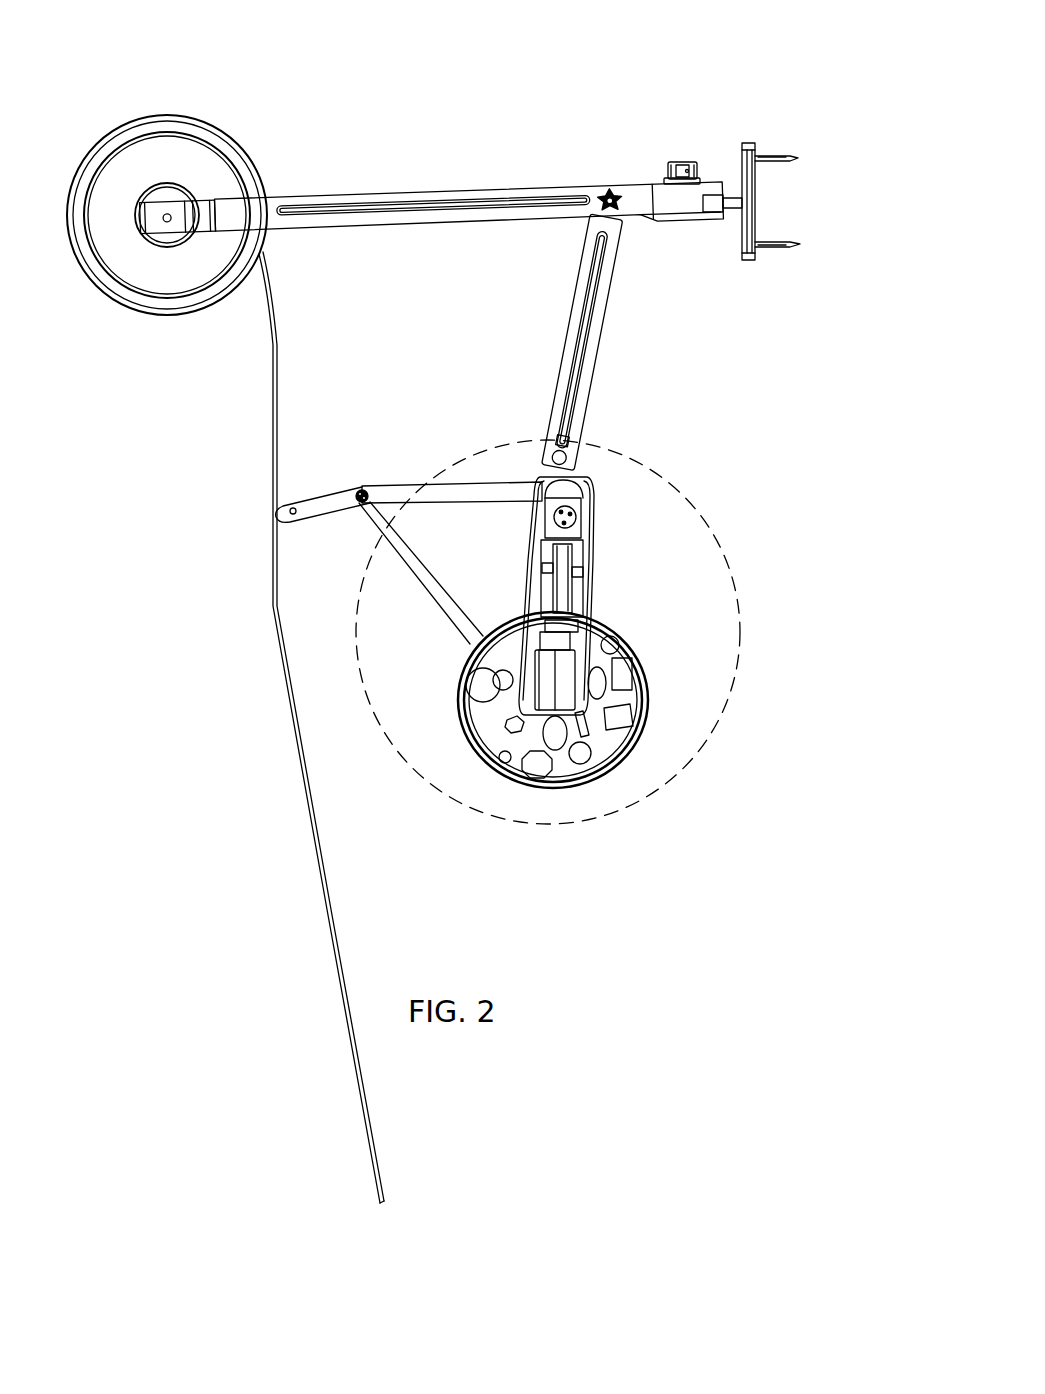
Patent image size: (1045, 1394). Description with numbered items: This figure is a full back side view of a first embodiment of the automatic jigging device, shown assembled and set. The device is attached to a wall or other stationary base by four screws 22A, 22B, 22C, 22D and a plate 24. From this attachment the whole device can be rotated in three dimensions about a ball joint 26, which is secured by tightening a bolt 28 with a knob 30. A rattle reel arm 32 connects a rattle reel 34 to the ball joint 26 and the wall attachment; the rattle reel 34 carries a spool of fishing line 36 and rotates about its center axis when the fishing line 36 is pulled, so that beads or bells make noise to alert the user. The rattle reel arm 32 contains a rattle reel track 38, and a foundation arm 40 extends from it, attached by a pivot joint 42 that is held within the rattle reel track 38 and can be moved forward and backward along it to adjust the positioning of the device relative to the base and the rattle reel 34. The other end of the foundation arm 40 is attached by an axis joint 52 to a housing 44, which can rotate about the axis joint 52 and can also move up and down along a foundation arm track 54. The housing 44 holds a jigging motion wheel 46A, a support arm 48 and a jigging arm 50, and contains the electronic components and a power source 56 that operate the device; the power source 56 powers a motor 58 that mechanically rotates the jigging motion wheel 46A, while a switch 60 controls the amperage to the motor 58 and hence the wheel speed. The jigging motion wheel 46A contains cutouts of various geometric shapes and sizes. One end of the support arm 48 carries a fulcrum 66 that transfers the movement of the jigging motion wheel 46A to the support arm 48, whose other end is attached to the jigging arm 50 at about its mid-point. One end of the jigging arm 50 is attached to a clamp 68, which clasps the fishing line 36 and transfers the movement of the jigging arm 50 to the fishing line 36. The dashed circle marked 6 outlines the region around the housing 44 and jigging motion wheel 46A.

The cutting head assembly 6 is at (625, 810).
The screw 22A is at (785, 157).
The screw 22B is at (795, 163).
The screw 22C is at (777, 247).
The screw 22D is at (795, 247).
The plate 24 is at (757, 200).
The ball joint 26 is at (712, 207).
The bolt 28 is at (652, 106).
The knob 30 is at (682, 162).
The rattle reel arm 32 is at (428, 128).
The rattle reel 34 is at (185, 108).
The fishing line 36 is at (278, 340).
The rattle reel track 38 is at (363, 200).
The foundation arm 40 is at (661, 357).
The pivot joint 42 is at (603, 190).
The housing 44 is at (592, 521).
The jigging motion wheel 46A is at (540, 790).
The support arm 48 is at (421, 587).
The jigging arm 50 is at (440, 484).
The axis joint 52 is at (575, 455).
The foundation arm track 54 is at (583, 396).
The power source 56 is at (586, 580).
The motor 58 is at (548, 684).
The switch 60 is at (630, 641).
The fulcrum 66 is at (492, 690).
The clamp 68 is at (293, 508).